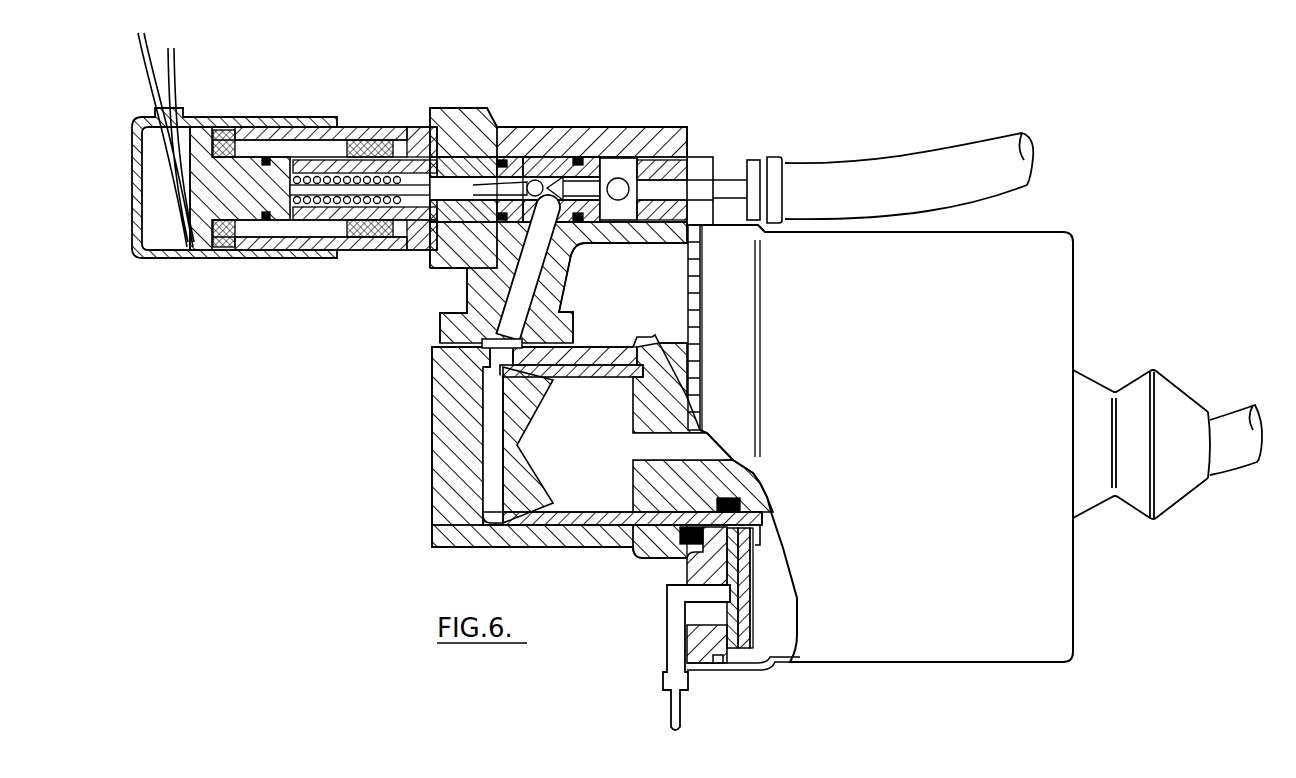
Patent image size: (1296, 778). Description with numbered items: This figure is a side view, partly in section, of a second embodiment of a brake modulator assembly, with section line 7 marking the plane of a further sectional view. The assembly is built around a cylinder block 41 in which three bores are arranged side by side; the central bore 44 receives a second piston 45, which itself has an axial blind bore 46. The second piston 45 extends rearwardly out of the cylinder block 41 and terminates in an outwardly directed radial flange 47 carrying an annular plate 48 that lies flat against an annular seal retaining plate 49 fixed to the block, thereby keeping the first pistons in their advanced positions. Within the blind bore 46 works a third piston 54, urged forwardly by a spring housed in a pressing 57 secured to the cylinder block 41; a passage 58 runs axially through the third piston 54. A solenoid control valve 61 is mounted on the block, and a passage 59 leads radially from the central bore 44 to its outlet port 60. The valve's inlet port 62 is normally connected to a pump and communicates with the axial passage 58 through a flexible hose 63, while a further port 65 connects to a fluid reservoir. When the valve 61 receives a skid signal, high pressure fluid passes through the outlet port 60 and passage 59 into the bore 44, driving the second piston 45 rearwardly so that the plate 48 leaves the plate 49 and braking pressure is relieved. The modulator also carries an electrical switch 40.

The section line 7- 7 is at (333, 443).
The electrical switch 40 is at (687, 605).
The cylinder block 41 is at (444, 478).
The central bore 44 is at (492, 527).
The second piston 45 is at (522, 490).
The axial blind bore 46 is at (593, 378).
The radial flange 47 is at (765, 533).
The annular plate 48 is at (755, 592).
The seal retaining plate 49 is at (729, 665).
The third piston 54 is at (742, 476).
The pressing 57 is at (917, 543).
The passage 58 is at (652, 437).
The passage 59 is at (495, 360).
The outlet port 60 is at (522, 290).
The solenoid control valve 61 is at (571, 127).
The inlet port 62 is at (618, 180).
The flexible hose 63 is at (852, 180).
The further port 65 is at (487, 153).